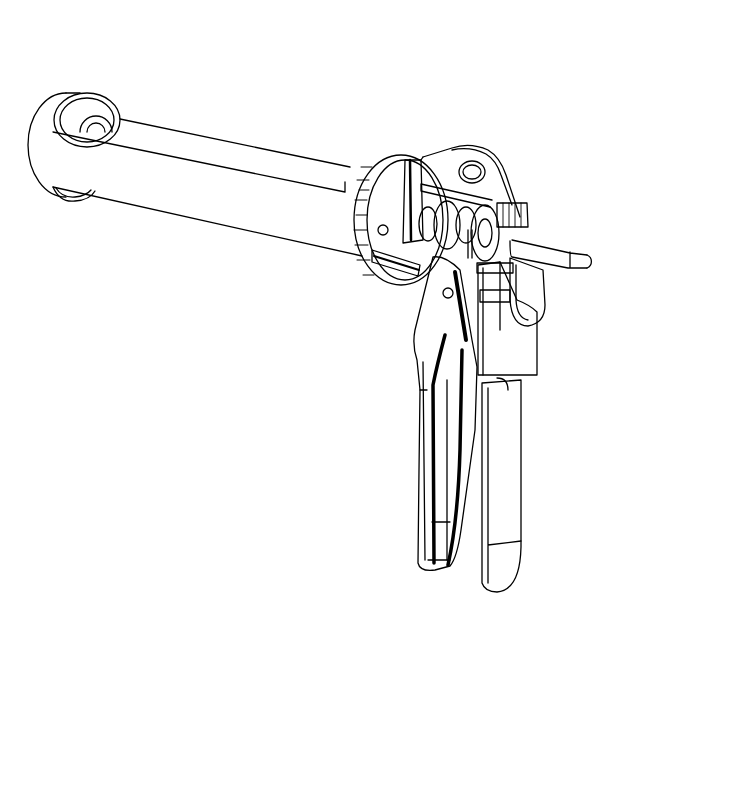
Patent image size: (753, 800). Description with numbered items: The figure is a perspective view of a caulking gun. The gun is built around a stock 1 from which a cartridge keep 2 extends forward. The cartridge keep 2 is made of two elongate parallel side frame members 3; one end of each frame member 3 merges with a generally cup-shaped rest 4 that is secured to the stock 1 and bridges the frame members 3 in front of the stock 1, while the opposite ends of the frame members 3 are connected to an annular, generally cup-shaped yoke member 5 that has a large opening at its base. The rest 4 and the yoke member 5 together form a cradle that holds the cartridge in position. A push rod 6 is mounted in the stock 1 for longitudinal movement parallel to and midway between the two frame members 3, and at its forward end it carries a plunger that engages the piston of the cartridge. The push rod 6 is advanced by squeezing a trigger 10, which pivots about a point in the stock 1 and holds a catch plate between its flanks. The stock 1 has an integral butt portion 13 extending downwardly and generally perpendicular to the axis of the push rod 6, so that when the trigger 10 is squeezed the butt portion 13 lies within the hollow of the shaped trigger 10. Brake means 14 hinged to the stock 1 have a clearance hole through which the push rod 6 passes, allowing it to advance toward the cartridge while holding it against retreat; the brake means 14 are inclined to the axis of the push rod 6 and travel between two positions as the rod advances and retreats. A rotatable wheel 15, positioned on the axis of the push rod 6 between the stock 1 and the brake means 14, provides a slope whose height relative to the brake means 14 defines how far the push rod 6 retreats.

The stock 1 is at (514, 158).
The cartridge keep 2 is at (294, 133).
The side frame members 3 is at (240, 162).
The rest 4 is at (377, 168).
The yoke member 5 is at (72, 96).
The push rod 6 is at (547, 252).
The trigger 10 is at (426, 460).
The butt portion 13 is at (479, 467).
The brake means 14 is at (530, 307).
The rotatable wheel 15 is at (528, 217).